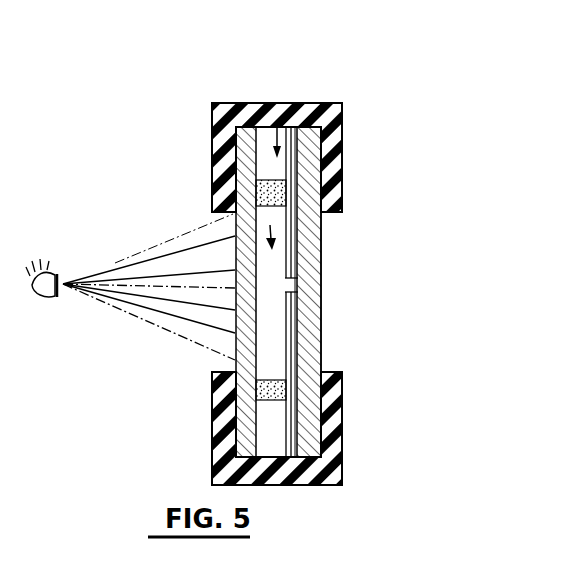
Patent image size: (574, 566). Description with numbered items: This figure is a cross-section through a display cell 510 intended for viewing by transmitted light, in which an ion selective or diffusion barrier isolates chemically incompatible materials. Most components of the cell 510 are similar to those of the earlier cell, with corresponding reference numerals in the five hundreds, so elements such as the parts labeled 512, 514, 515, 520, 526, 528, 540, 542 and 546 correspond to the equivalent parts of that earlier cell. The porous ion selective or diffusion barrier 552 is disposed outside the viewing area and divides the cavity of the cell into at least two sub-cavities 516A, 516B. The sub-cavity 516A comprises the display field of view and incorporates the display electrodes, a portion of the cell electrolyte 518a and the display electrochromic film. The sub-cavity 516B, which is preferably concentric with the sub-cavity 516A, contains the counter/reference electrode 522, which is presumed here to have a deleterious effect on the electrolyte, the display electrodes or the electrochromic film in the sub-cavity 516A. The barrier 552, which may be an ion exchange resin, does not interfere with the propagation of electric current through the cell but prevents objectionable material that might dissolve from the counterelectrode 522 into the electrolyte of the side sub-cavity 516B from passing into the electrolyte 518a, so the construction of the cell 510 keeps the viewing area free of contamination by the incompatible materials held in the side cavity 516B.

The display cell 510 is at (349, 216).
The lower housing block 512 is at (338, 456).
The right wall 514 is at (320, 366).
The left wall (window) 515 is at (233, 350).
The sub-cavity 516A is at (269, 225).
The sub-cavity 516B is at (290, 126).
The electrolyte 518a is at (272, 325).
The wall boundary 520 is at (315, 238).
The counter/reference electrode 522 is at (237, 126).
The plate surface 526 is at (297, 345).
The slot 528 is at (298, 286).
The inlet flow 540 is at (293, 127).
The outlet passage 542 is at (262, 447).
The outlet 546 is at (295, 458).
The porous ion selective or diffusion barrier 552 is at (272, 190).